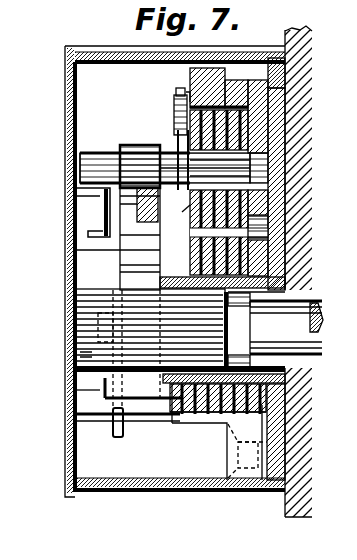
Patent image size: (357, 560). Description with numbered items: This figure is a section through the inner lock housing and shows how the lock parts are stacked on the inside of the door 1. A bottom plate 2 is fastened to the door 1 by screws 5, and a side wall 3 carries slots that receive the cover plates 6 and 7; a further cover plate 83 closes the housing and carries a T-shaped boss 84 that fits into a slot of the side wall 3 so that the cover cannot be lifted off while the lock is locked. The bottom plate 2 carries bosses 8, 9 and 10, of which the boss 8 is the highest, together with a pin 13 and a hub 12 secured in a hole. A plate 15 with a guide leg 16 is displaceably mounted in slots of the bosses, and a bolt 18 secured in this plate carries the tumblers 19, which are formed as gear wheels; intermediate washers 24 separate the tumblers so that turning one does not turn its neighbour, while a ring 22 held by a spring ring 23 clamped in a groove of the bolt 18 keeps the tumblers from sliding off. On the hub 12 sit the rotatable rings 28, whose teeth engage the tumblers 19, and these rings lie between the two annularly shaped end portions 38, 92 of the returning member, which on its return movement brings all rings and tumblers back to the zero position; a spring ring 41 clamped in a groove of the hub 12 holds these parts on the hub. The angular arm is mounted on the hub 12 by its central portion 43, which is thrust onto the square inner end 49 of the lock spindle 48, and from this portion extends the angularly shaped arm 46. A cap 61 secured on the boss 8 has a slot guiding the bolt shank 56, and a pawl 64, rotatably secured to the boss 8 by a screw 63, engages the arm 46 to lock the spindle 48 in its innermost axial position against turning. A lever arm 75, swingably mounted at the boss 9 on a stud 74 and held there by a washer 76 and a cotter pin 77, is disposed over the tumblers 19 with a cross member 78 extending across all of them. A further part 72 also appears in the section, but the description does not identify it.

The door 1 is at (280, 208).
The bottom plate 2 is at (280, 150).
The side wall 3 is at (90, 97).
The screws 5 is at (300, 165).
The cover plate 6 is at (100, 58).
The cover plate 7 is at (108, 492).
The boss 8 is at (178, 228).
The boss 9 is at (300, 42).
The boss 10 is at (247, 470).
The hub 12 is at (276, 283).
The pin 13 is at (270, 246).
The plate 15 is at (275, 102).
The guide leg 16 is at (258, 470).
The bolt 18 is at (283, 190).
The tumblers 19 is at (270, 226).
The ring 22 is at (177, 216).
The spring ring 23 is at (180, 148).
The intermediate washers 24 is at (262, 132).
The rings 28 is at (268, 424).
The annularly shaped end portion 38 is at (185, 423).
The spring ring 41 is at (172, 388).
The central portion 43 is at (90, 359).
The angularly shaped arm 46 is at (104, 403).
The lock spindle 48 is at (300, 331).
The square inner end 49 is at (318, 308).
The bolt shank 56 is at (138, 208).
The cap 61 is at (136, 276).
The screw 63 is at (104, 332).
The pawl 64 is at (113, 428).
The drive shaft 72 is at (92, 166).
The stud 74 is at (176, 118).
The lever arm 75 is at (224, 68).
The washer 76 is at (188, 93).
The cotter pin 77 is at (178, 100).
The cross member 78 is at (276, 74).
The cover plate 83 is at (66, 128).
The T-shaped boss 84 is at (90, 207).
The annularly shaped end portion 92 is at (262, 407).